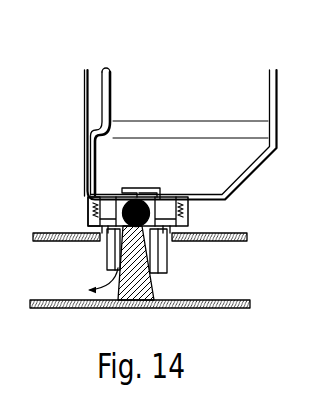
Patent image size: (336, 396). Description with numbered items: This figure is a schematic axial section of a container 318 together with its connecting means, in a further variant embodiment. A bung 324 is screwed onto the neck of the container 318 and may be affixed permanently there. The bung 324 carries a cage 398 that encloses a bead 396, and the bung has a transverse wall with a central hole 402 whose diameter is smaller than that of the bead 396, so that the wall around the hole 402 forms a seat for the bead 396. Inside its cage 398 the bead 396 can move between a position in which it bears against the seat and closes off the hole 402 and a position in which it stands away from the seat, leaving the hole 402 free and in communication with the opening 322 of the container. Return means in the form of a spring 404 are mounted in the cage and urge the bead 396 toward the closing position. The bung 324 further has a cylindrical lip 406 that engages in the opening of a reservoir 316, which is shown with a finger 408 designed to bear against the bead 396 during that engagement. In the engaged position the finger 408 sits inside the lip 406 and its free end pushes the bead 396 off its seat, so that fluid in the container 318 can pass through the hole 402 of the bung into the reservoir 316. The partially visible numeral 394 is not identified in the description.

The container 318 is at (277, 83).
The spring 404 is at (329, 138).
The bung 324 is at (198, 216).
The opening 322 is at (92, 200).
The cage 398 is at (133, 188).
The bead 396 is at (141, 197).
The central hole 402 is at (112, 247).
The cylindrical lip 406 is at (167, 260).
The finger 408 is at (144, 288).
The reservoir 316 is at (231, 246).
The component (partially visible) 394 is at (327, 239).